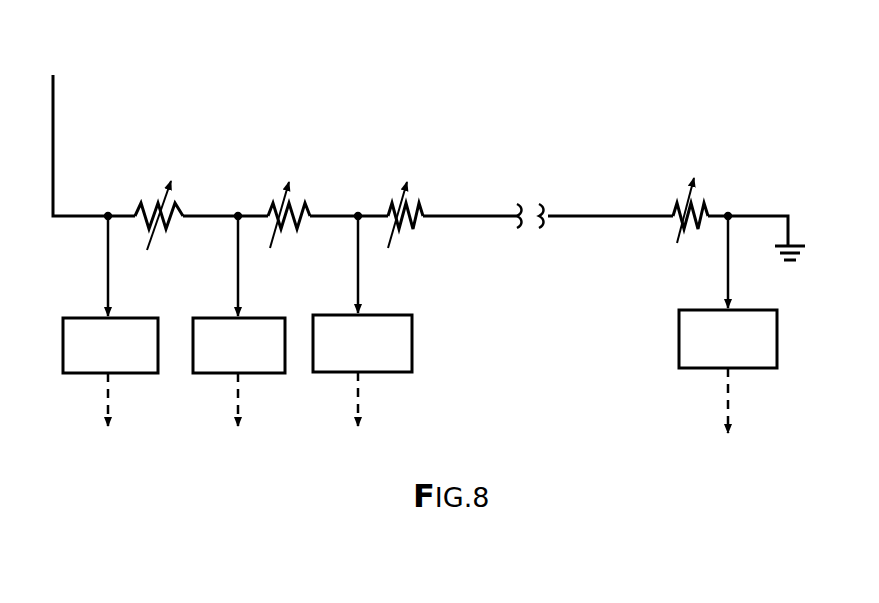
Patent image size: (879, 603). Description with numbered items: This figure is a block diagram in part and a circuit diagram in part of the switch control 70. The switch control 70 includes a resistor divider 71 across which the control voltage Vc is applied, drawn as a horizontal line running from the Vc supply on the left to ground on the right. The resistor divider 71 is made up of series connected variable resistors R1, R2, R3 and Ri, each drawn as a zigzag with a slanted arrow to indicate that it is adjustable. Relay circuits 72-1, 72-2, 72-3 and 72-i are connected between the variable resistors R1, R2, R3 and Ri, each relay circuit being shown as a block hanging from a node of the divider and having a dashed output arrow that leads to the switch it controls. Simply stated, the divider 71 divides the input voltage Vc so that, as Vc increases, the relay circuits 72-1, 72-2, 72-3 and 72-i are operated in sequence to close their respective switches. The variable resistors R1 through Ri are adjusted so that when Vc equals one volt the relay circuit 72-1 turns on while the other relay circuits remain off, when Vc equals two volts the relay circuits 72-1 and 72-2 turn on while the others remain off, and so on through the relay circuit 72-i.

The switch control 70 is at (392, 82).
The resistor divider 71 is at (143, 173).
The variable resistor R1 is at (187, 194).
The variable resistor R2 is at (312, 194).
The variable resistor R3 is at (432, 193).
The variable resistor Ri is at (710, 193).
The relay circuit 72-1 is at (122, 305).
The relay circuit 72-2 is at (252, 305).
The relay circuit 72-3 is at (395, 304).
The relay circuit 72-i is at (760, 302).